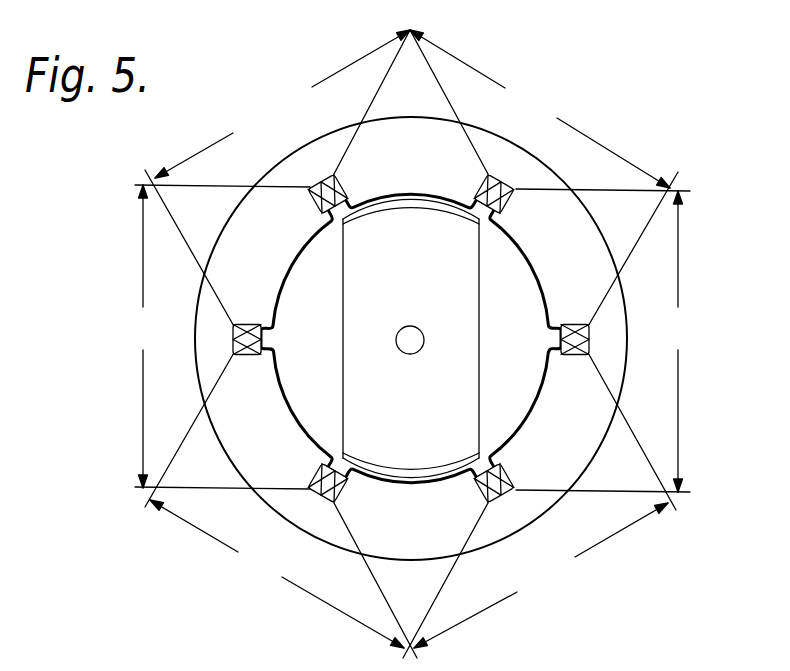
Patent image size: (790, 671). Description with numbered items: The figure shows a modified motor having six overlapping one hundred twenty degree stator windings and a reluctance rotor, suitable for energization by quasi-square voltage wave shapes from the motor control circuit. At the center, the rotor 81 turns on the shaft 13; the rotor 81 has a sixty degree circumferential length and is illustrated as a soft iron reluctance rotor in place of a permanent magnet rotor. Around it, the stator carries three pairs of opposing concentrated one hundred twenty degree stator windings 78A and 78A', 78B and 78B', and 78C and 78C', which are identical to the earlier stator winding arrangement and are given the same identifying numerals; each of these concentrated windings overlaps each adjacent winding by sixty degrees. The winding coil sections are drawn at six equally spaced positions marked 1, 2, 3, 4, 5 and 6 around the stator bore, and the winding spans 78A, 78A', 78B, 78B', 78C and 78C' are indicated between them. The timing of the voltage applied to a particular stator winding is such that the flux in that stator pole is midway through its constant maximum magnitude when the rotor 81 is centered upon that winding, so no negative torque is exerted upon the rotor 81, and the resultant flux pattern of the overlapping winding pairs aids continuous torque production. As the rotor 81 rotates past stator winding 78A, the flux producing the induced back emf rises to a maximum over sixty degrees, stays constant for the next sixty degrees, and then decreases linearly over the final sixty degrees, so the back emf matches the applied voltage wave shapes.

The coil 1 is at (494, 184).
The coil 2 is at (585, 341).
The coil 3 is at (494, 492).
The coil 4 is at (323, 492).
The coil 5 is at (234, 340).
The coil 6 is at (326, 184).
The shaft 13 is at (417, 331).
The rotor 81 is at (348, 286).
The stator winding 78A is at (684, 341).
The stator winding 78A' is at (140, 336).
The stator winding 78B is at (541, 575).
The stator winding 78B' is at (282, 104).
The stator winding 78C is at (277, 574).
The stator winding 78C' is at (540, 109).